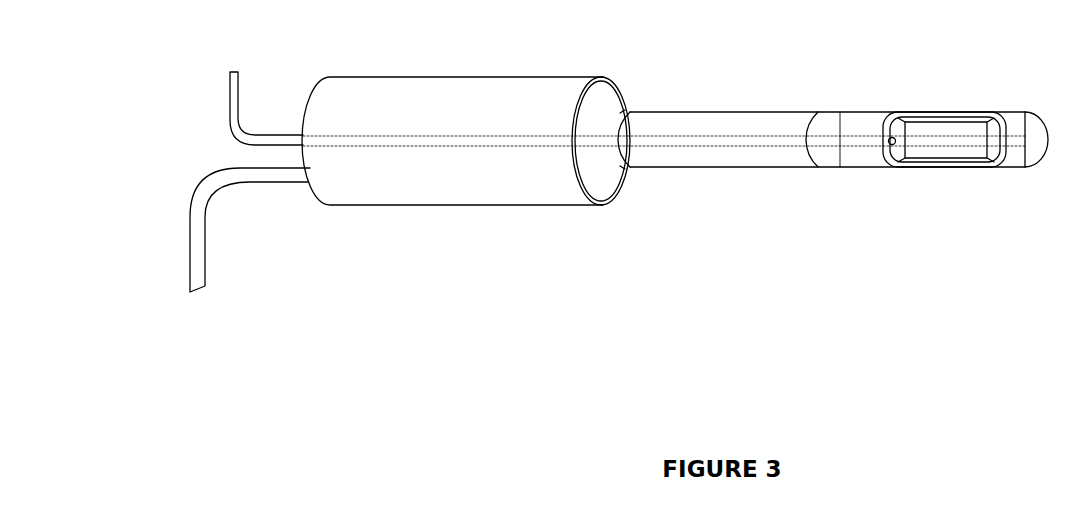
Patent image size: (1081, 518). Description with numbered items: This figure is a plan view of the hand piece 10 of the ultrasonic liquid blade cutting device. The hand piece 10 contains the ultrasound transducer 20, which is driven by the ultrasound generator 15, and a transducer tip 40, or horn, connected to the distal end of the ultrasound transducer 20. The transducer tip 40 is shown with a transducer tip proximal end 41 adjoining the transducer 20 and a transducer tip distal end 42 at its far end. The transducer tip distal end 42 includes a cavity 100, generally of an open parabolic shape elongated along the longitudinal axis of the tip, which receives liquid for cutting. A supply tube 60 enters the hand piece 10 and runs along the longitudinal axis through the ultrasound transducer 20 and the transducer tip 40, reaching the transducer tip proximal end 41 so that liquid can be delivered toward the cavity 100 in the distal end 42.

The hand piece 10 is at (1047, 385).
The ultrasound generator 15 is at (212, 202).
The ultrasound transducer 20 is at (601, 368).
The transducer tip 40 is at (1047, 180).
The transducer tip proximal end 41 is at (812, 200).
The transducer tip distal end 42 is at (812, 275).
The supply tube 60 is at (242, 123).
The cavity 100 is at (948, 138).